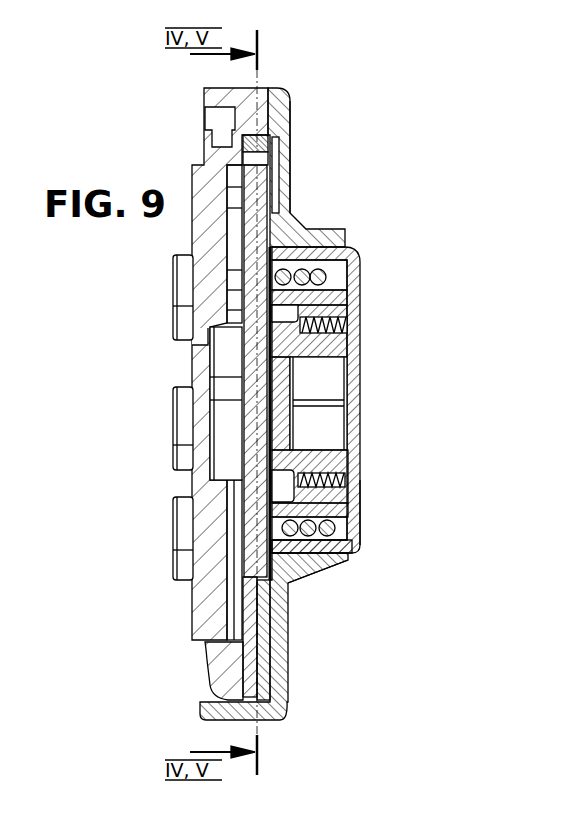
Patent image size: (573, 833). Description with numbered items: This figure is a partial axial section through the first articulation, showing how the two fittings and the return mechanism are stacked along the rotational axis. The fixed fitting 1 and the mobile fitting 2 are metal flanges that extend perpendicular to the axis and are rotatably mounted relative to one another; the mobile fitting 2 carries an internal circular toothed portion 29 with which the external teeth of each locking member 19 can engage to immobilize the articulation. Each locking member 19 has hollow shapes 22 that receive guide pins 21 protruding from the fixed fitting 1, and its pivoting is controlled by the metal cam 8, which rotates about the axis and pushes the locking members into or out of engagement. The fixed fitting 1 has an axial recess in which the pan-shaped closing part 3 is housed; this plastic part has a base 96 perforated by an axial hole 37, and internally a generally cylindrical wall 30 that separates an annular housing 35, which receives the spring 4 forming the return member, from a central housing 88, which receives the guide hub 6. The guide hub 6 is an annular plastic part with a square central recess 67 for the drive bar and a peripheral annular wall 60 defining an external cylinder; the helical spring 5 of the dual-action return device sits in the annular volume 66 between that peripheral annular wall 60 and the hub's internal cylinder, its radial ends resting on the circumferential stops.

The fixed fitting 1 is at (325, 206).
The mobile fitting 2 is at (158, 622).
The closing part 3 is at (380, 298).
The spring forming a return member 4 is at (352, 554).
The helical spring 5 is at (345, 325).
The guide hub 6 is at (332, 344).
The cam 8 is at (235, 325).
The locking member 19 is at (258, 661).
The guide pin 21 is at (266, 618).
The hollow shape 22 is at (228, 638).
The internal circular toothed portion 29 is at (262, 150).
The wall 30 is at (352, 290).
The annular housing 35 is at (326, 556).
The axial hole 37 is at (360, 455).
The peripheral annular wall 60 is at (340, 495).
The annular volume 66 is at (346, 482).
The central recess 67 is at (326, 383).
The central housing 88 is at (278, 490).
The base 96 is at (362, 534).